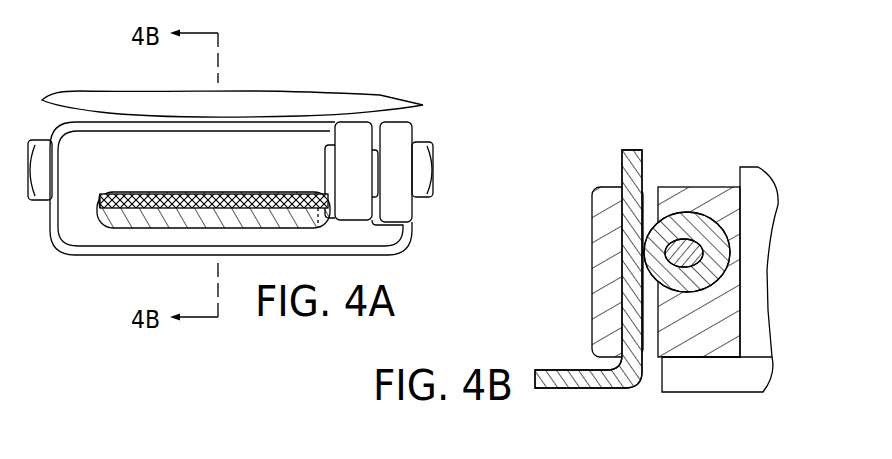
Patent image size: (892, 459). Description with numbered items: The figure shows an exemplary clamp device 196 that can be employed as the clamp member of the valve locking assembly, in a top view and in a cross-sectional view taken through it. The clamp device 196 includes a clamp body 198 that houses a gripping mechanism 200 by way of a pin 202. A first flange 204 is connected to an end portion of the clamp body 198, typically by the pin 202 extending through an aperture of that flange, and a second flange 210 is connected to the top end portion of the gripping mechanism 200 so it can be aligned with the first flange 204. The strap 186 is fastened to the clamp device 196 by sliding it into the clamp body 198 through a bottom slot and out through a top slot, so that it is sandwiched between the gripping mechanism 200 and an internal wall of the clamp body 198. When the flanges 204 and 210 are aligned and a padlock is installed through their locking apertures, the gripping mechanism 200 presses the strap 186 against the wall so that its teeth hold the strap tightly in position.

In FIG. 4A, the strap 186 is at (213, 208).
In FIG. 4A, the clamp device 196 is at (96, 60).
In FIG. 4B, the clamp device 196 is at (586, 141).
In FIG. 4A, the clamp body 198 is at (82, 255).
In FIG. 4B, the clamp body 198 is at (592, 245).
In FIG. 4A, the gripping mechanism 200 is at (163, 206).
In FIG. 4B, the gripping mechanism 200 is at (690, 223).
In FIG. 4A, the pin 202 is at (430, 194).
In FIG. 4B, the pin 202 is at (692, 247).
In FIG. 4A, the first flange 204 is at (397, 155).
In FIG. 4A, the second flange 210 is at (357, 138).